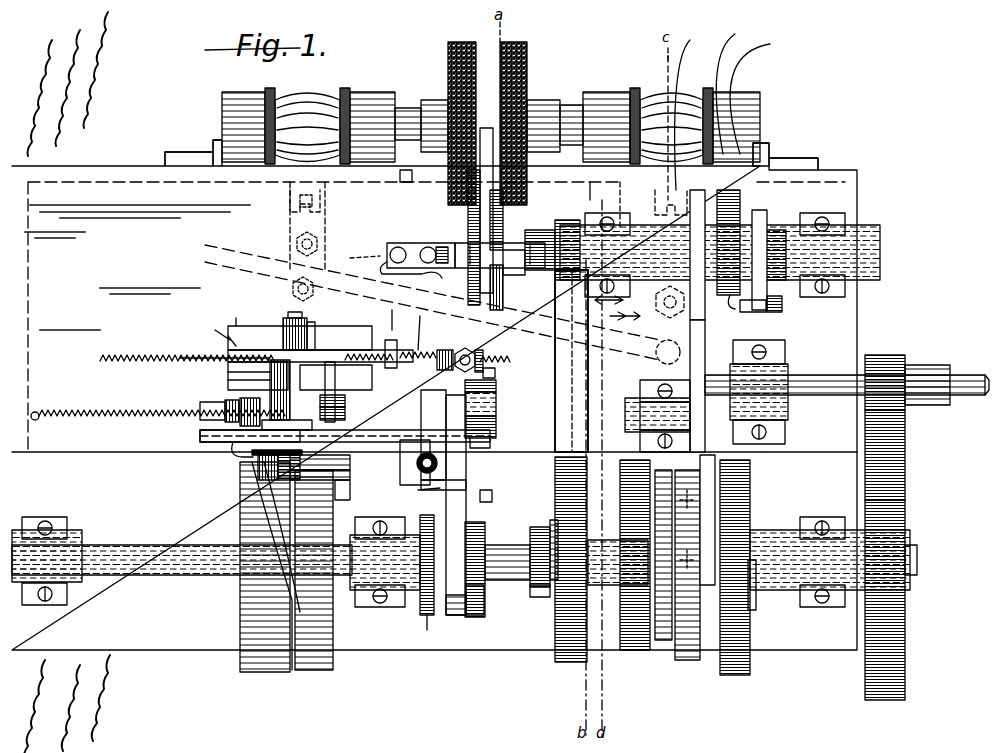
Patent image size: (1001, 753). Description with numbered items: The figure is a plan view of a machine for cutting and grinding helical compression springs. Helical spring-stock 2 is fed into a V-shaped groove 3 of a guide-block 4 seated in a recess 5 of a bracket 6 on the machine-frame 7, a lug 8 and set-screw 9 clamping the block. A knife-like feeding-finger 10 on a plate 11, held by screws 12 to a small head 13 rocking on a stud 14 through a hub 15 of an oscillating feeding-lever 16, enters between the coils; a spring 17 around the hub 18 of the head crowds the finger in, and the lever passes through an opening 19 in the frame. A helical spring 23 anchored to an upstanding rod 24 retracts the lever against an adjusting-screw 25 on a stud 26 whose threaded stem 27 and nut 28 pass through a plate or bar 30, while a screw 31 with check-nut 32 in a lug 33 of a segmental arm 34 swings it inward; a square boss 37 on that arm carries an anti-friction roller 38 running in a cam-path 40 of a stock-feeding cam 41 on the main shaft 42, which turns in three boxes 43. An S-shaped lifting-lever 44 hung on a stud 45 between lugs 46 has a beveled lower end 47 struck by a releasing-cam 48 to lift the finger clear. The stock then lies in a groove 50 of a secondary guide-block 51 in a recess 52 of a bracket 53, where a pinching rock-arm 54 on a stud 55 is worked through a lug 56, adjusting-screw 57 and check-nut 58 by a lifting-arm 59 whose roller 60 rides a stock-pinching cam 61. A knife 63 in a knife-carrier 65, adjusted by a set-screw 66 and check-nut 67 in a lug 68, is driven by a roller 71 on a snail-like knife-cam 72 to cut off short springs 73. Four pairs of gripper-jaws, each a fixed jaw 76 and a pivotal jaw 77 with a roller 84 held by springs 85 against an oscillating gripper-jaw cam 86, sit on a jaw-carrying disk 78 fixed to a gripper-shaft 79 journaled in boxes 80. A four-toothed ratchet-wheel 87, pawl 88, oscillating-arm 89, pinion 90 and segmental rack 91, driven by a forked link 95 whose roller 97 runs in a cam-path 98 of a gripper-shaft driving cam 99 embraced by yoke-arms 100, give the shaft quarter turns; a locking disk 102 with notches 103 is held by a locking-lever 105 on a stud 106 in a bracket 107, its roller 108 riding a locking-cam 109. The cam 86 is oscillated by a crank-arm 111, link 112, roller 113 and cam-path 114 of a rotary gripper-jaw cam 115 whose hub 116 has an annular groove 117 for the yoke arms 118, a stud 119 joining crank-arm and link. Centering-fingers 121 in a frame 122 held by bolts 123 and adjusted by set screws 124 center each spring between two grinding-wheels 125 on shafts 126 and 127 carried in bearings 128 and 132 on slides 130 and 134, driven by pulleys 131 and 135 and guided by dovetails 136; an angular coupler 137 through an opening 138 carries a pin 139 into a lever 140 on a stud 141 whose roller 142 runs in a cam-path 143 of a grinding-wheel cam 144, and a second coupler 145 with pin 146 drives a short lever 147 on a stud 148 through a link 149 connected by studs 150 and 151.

The spring-stock 2 is at (137, 356).
The V-shaped groove 3 is at (224, 364).
The guide-block 4 is at (232, 342).
The recess 5 is at (188, 356).
The bracket 6 is at (248, 325).
The machine-frame 7 is at (806, 663).
The lug 8 is at (316, 330).
The set-screw 9 is at (286, 316).
The feeding-finger 10 is at (391, 340).
The horizontal plate 11 is at (370, 352).
The screws 12 is at (335, 356).
The head 13 is at (286, 342).
The stud 14 is at (230, 380).
The hub 15 is at (226, 370).
The oscillating feeding-lever 16 is at (335, 370).
The spring 17 is at (290, 376).
The hub 18 is at (246, 340).
The opening 19 is at (288, 415).
The helical spring 23 is at (162, 427).
The upstanding rod 24 is at (37, 412).
The adjusting-screw 25 is at (238, 448).
The adjustable stud 26 is at (262, 458).
The threaded stem 27 is at (252, 470).
The nut 28 is at (280, 462).
The plate or bar 30 is at (400, 448).
The screw 31 is at (200, 410).
The check-nut 32 is at (180, 407).
The lug 33 is at (210, 421).
The segmental arm 34 is at (215, 436).
The square boss 37 is at (324, 463).
The anti-friction roller 38 is at (328, 476).
The cam-path 40 is at (356, 490).
The stock-feeding cam 41 is at (240, 610).
The main shaft 42 is at (180, 560).
The boxes 43 is at (68, 580).
The lifting-lever 44 is at (346, 377).
The stud 45 is at (346, 398).
The lugs 46 is at (346, 412).
The lower end 47 is at (374, 432).
The releasing-cam 48 is at (340, 628).
The V-shaped groove 50 is at (424, 326).
The secondary guide-block 51 is at (411, 276).
The recess 52 is at (497, 400).
The bracket 53 is at (497, 420).
The rock-arm 54 is at (440, 440).
The stud 55 is at (497, 384).
The lug 56 is at (446, 460).
The adjusting-screw 57 is at (418, 470).
The check-nut 58 is at (416, 495).
The lifting-arm 59 is at (491, 500).
The antifriction roller 60 is at (425, 580).
The stock-pinching cam 61 is at (427, 620).
The knife 63 is at (497, 372).
The knife-carrier 65 is at (466, 470).
The set-screw 66 is at (488, 356).
The check-nut 67 is at (500, 352).
The lug 68 is at (462, 350).
The antifriction roller 71 is at (474, 620).
The knife-cam 72 is at (485, 622).
The springs 73 is at (540, 100).
The fixed jaw 76 is at (487, 128).
The pivotal jaw 77 is at (465, 203).
The jaw-carrying disk 78 is at (394, 312).
The gripper-shaft 79 is at (555, 340).
The boxes 80 is at (606, 213).
The anti-friction roller 84 is at (505, 225).
The springs 85 is at (540, 230).
The oscillating gripper-jaw cam 86 is at (567, 220).
The ratchet-wheel 87 is at (774, 230).
The pawl 88 is at (774, 298).
The oscillating-arm 89 is at (755, 312).
The oscillating pinion 90 is at (736, 302).
The segmental rack 91 is at (730, 192).
The forked link 95 is at (748, 345).
The anti-friction roller 97 is at (748, 556).
The cam-path 98 is at (740, 470).
The gripper-shaft driving cam 99 is at (745, 492).
The yoke-arms 100 is at (715, 535).
The gripper-locking disk 102 is at (705, 311).
The locking-notches 103 is at (758, 210).
The locking-lever 105 is at (690, 372).
The stud 106 is at (642, 400).
The bracket 107 is at (650, 418).
The roller 108 is at (751, 610).
The gripper-shaft locking-cam 109 is at (698, 575).
The crank-arm 111 is at (603, 185).
The link 112 is at (530, 438).
The antifriction roller 113 is at (553, 520).
The cam-path 114 is at (532, 530).
The rotary gripper-jaw cam 115 is at (566, 662).
The hub 116 is at (542, 584).
The annular groove 117 is at (550, 591).
The arms 118 is at (548, 560).
The stud 119 is at (633, 202).
The centering-fingers 121 is at (450, 205).
The frame 122 is at (500, 255).
The bolts 123 is at (395, 248).
The set screws 124 is at (365, 263).
The grinding-wheels 125 is at (500, 45).
The shaft 126 is at (571, 105).
The shaft 127 is at (405, 108).
The bearings 128 is at (605, 92).
The horizontal slide 130 is at (770, 146).
The pulley 131 is at (674, 96).
The bearings 132 is at (240, 95).
The horizontal slide 134 is at (214, 140).
The pulley 135 is at (305, 95).
The dovetails 136 is at (166, 151).
The angular coupler 137 is at (738, 87).
The opening 138 is at (762, 92).
The pin 139 is at (695, 105).
The lever 140 is at (648, 455).
The stud 141 is at (658, 303).
The roller 142 is at (645, 590).
The cam-path 143 is at (660, 642).
The grinding-wheel cam 144 is at (680, 650).
The angular coupler 145 is at (330, 184).
The pin 146 is at (298, 212).
The short lever 147 is at (290, 244).
The stud 148 is at (292, 285).
The link 149 is at (390, 260).
The stud 150 is at (297, 262).
The stud 151 is at (655, 352).